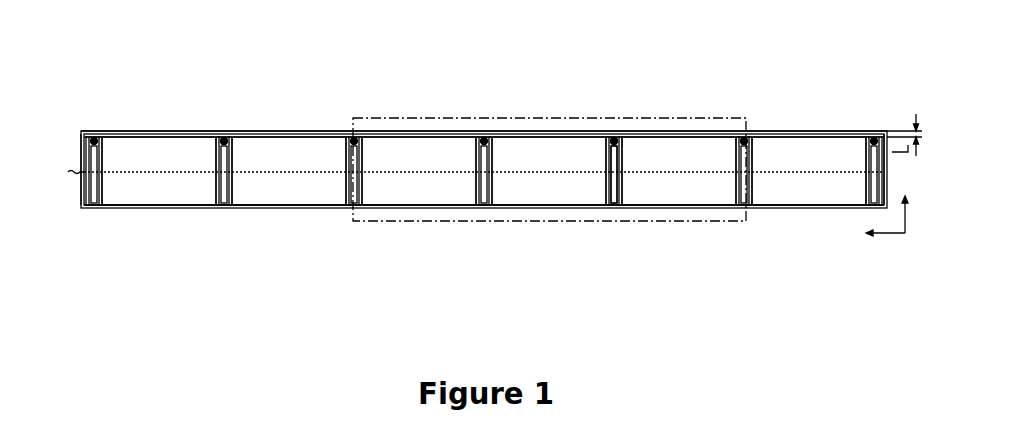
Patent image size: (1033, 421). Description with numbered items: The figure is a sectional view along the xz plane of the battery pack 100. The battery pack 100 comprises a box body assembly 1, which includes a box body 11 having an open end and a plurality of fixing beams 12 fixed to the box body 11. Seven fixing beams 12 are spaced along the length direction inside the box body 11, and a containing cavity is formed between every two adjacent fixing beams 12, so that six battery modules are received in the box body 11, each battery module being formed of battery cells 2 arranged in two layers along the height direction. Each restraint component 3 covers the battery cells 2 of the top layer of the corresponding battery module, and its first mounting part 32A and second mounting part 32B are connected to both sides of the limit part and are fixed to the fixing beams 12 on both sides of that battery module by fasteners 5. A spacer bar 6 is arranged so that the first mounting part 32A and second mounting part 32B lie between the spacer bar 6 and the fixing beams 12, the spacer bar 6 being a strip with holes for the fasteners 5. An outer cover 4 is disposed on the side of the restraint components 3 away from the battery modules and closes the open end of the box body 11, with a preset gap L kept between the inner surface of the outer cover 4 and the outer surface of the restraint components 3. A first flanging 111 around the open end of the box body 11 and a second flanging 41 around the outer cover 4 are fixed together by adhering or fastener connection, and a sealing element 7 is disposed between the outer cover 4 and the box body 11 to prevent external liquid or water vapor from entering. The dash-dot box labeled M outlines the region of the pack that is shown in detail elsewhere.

The battery pack 100 is at (514, 37).
The box body assembly 1 is at (329, 216).
The battery cell 2 is at (160, 196).
The restraint component 3 is at (275, 135).
The outer cover 4 is at (418, 133).
The fastener 5 is at (223, 139).
The spacer bar 6 is at (746, 140).
The sealing element 7 is at (888, 170).
The box body 11 is at (413, 210).
The fixing beam 12 is at (487, 206).
The first mounting part 32A is at (614, 139).
The second mounting part 32B is at (620, 140).
The second flanging 41 is at (80, 170).
The first flanging 111 is at (80, 173).
The module region M is at (655, 222).